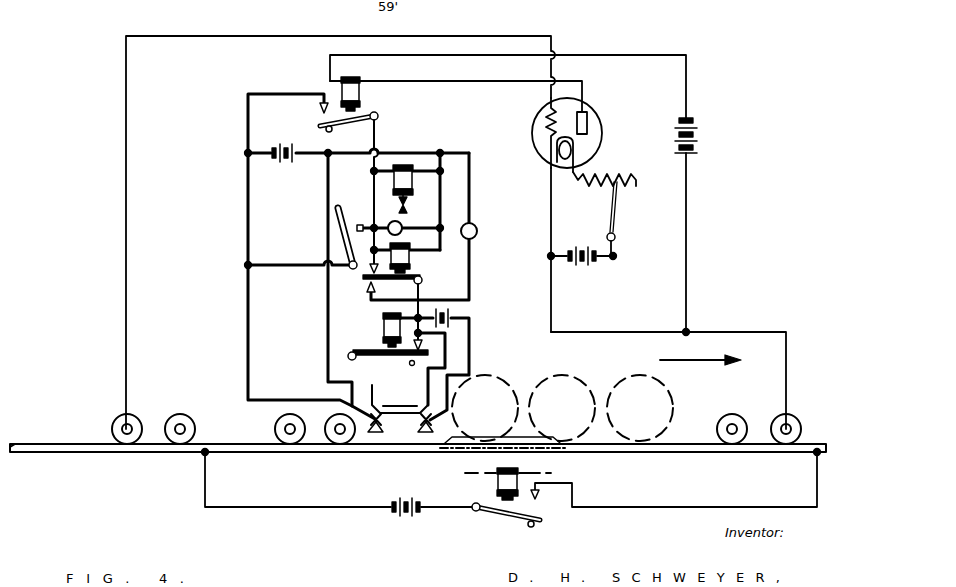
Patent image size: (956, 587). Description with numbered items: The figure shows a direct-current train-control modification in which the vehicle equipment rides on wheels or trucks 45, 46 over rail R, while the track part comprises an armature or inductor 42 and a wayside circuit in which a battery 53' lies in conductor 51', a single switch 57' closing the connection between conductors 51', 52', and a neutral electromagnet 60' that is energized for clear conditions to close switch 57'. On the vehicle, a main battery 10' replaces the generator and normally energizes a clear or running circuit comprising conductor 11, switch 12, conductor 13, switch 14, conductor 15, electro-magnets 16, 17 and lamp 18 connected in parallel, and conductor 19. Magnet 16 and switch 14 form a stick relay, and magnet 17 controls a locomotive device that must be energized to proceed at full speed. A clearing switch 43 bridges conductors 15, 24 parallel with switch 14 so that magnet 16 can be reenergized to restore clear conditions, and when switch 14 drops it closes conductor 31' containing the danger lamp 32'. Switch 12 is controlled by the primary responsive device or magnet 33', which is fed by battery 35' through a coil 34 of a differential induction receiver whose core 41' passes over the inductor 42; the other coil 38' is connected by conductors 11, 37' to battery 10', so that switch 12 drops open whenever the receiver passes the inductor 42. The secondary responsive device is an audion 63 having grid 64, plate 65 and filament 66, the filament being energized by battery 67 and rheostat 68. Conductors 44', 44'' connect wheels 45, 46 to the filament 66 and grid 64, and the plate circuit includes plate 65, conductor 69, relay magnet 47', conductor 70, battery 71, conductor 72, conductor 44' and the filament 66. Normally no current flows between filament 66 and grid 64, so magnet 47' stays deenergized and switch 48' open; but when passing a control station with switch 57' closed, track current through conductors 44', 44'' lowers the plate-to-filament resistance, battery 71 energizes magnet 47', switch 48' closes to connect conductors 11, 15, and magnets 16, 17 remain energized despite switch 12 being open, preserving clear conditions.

The rail R is at (82, 453).
The wheel or truck 46 is at (124, 427).
The wheel or truck 45 is at (792, 426).
The armature or inductor 42 is at (521, 440).
The conductor 44'' is at (297, 232).
The conductor 70 is at (596, 53).
The conductor 69 is at (483, 81).
The battery 71 is at (700, 134).
The conductor 72 is at (688, 205).
The conductor 44' is at (668, 359).
The audion or detector 63 is at (532, 143).
The grid 64 is at (548, 116).
The plate 65 is at (588, 123).
The filament 66 is at (578, 148).
The rheostat or variable resistance 68 is at (619, 204).
The battery 67 is at (585, 265).
The conductor 11 is at (283, 93).
The main battery 10' is at (357, 165).
The conductor 24 is at (283, 265).
The conductor 37' is at (326, 286).
The relay magnet 47' is at (377, 94).
The switch 48' is at (331, 187).
The conductor 19 is at (440, 198).
The conductor 15 is at (371, 193).
The electro-magnet 17 is at (404, 170).
The lamp 18 is at (399, 225).
The electro-magnet 16 is at (411, 258).
The clearing switch 43 is at (343, 237).
The danger lamp 32' is at (448, 226).
The conductor 31' is at (496, 279).
The switch 14 is at (391, 287).
The conductor 13 is at (423, 289).
The battery 35' is at (451, 359).
The primary responsive device or magnet 33' is at (374, 330).
The switch 12 is at (363, 356).
The core 41' is at (400, 397).
The coil 34 is at (423, 427).
The coil 38' is at (366, 455).
The conductor 51' is at (297, 494).
The battery 53' is at (423, 532).
The switch 57' is at (506, 524).
The neutral electromagnet 60' is at (503, 484).
The conductor 52' is at (676, 478).